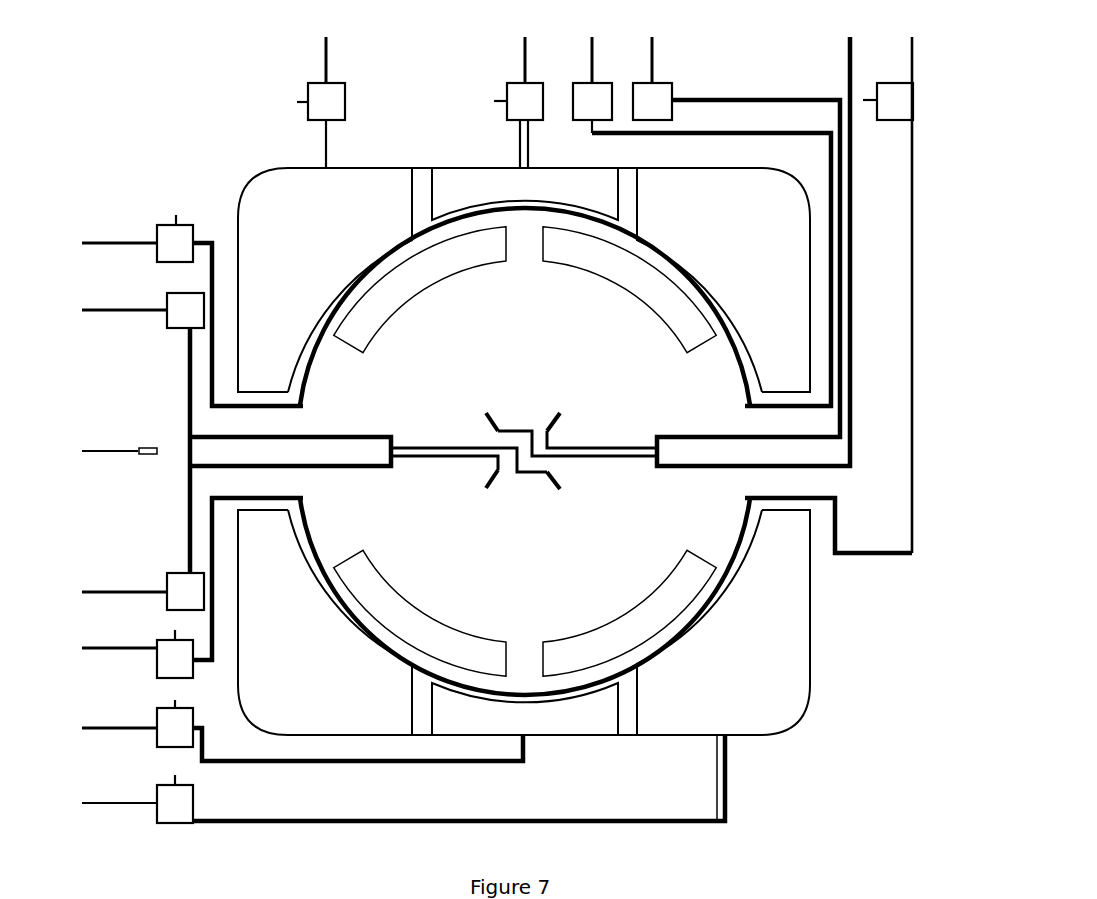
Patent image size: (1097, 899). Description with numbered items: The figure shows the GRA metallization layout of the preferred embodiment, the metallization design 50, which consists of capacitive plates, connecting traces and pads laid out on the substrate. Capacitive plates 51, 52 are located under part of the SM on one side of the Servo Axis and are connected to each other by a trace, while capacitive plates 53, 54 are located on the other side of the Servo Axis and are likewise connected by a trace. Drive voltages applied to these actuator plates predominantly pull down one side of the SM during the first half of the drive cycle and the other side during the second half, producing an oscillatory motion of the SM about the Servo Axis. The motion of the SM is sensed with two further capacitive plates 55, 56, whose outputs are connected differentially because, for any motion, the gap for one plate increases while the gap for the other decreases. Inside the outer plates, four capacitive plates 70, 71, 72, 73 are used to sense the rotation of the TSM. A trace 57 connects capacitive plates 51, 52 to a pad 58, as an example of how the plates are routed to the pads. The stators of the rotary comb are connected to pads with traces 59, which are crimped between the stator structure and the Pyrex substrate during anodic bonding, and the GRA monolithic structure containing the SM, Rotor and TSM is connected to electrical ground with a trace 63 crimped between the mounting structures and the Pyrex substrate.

The metallization design 50 is at (233, 144).
The capacitive plate 51 is at (325, 622).
The capacitive plate 52 is at (723, 622).
The capacitive plate 53 is at (325, 280).
The capacitive plate 54 is at (723, 280).
The capacitive plate 55 is at (568, 722).
The capacitive plate 56 is at (467, 180).
The trace 57 is at (655, 818).
The pad 58 is at (178, 800).
The traces 59 is at (482, 483).
The trace 63 is at (143, 463).
The capacitive plate 70 is at (618, 612).
The capacitive plate 71 is at (422, 598).
The capacitive plate 72 is at (423, 305).
The capacitive plate 73 is at (618, 305).